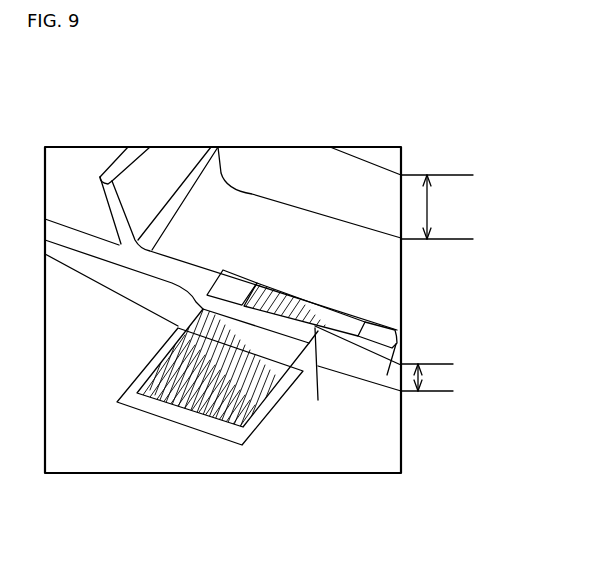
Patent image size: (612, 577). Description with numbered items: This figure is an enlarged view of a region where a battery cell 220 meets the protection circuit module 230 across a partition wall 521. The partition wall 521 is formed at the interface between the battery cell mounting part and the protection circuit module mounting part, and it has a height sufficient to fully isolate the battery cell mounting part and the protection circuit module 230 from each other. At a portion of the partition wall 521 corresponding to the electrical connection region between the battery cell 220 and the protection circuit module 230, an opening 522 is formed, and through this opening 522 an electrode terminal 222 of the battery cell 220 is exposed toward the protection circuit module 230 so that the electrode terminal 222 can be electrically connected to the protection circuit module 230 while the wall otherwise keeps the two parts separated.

The battery cell 220 is at (352, 168).
The protection circuit module 230 is at (119, 458).
The electrode terminal 222 is at (248, 425).
The partition wall 521 is at (400, 331).
The opening 522 is at (318, 400).